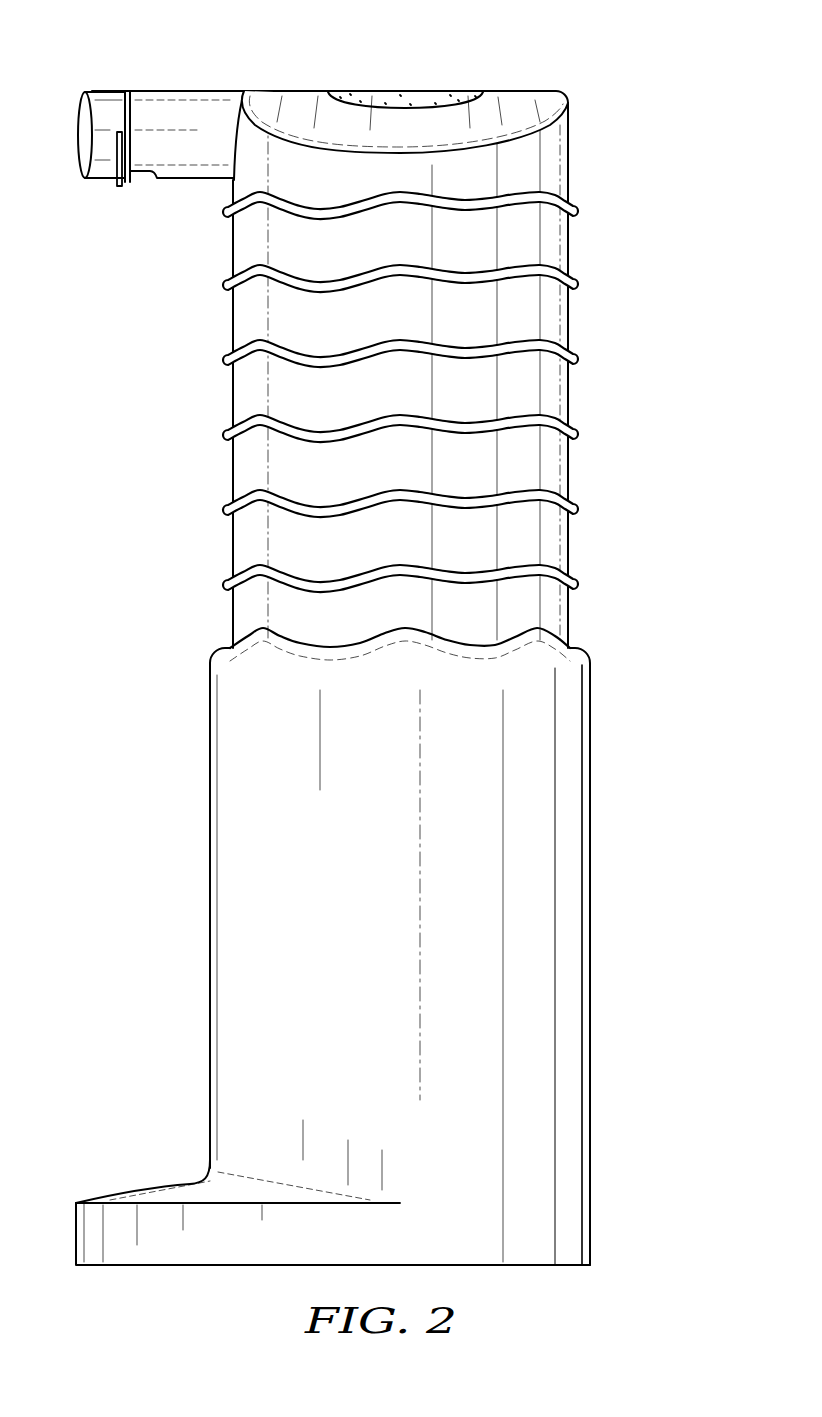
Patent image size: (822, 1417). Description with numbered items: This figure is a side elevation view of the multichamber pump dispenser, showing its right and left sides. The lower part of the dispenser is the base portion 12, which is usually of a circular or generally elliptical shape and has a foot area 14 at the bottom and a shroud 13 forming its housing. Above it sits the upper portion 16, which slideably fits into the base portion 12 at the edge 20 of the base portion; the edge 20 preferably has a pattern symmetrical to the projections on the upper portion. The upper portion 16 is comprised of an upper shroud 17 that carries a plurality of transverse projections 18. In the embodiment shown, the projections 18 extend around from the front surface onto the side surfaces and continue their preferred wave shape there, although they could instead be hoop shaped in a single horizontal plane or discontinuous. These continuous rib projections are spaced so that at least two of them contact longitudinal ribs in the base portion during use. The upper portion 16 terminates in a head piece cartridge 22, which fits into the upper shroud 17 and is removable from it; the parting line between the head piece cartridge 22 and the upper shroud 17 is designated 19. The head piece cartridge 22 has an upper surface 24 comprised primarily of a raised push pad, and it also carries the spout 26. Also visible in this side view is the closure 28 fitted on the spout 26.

The base portion 12 is at (592, 935).
The shroud 13 is at (232, 903).
The foot area 14 is at (125, 1193).
The upper portion 16 is at (572, 252).
The upper shroud 17 is at (533, 463).
The transverse projections 18 is at (228, 285).
The parting line 19 is at (566, 182).
The edge 20 is at (564, 632).
The head piece cartridge 22 is at (568, 128).
The upper surface 24 is at (428, 94).
The spout 26 is at (182, 91).
The closure 28 is at (100, 91).